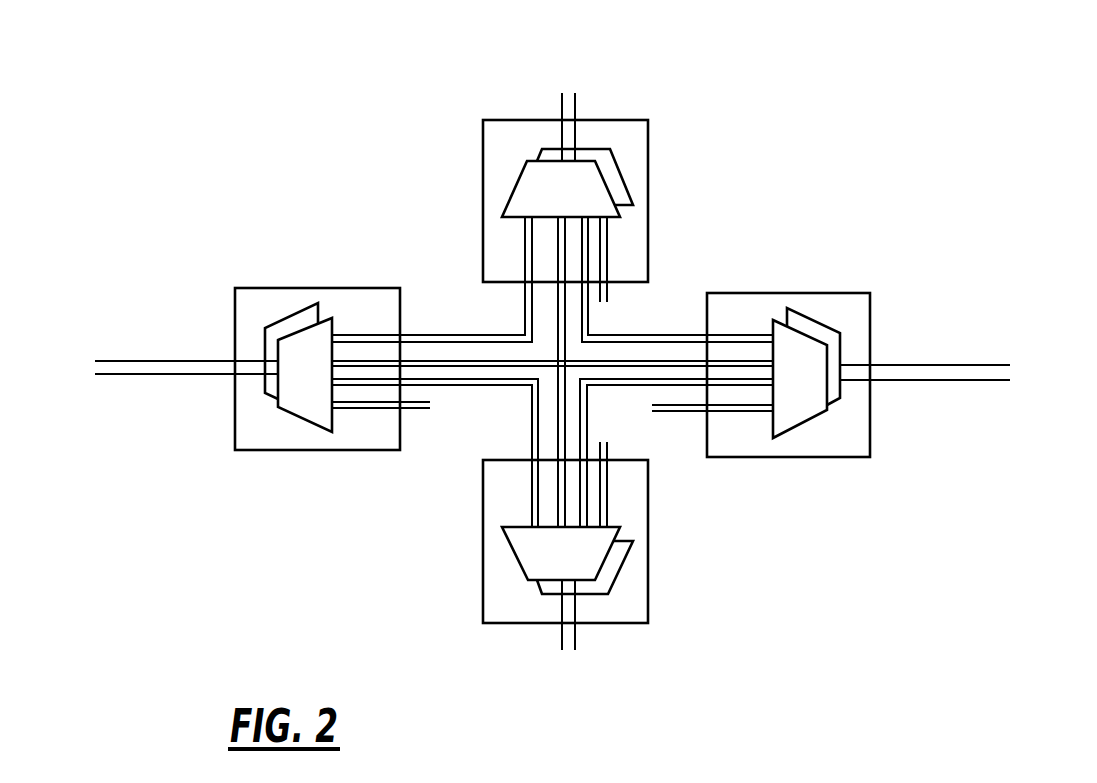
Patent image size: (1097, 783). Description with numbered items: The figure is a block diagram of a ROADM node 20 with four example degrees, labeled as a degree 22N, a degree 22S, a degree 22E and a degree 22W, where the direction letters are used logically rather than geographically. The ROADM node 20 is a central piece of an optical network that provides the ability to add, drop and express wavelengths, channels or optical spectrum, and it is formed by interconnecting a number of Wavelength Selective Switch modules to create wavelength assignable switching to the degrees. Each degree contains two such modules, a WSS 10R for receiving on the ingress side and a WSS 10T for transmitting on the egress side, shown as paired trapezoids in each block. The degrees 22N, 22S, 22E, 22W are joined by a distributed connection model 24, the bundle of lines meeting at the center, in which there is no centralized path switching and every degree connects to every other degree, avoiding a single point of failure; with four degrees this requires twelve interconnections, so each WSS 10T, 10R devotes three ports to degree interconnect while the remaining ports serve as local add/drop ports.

The ROADM node 20 is at (833, 78).
The distributed connection model 24 is at (650, 317).
The degree (N) 22N is at (649, 228).
The degree (S) 22S is at (649, 545).
The degree (W) 22W is at (328, 288).
The degree (E) 22E is at (803, 293).
The WSS for receiving 10R is at (583, 162).
The WSS for transmitting 10T is at (623, 177).